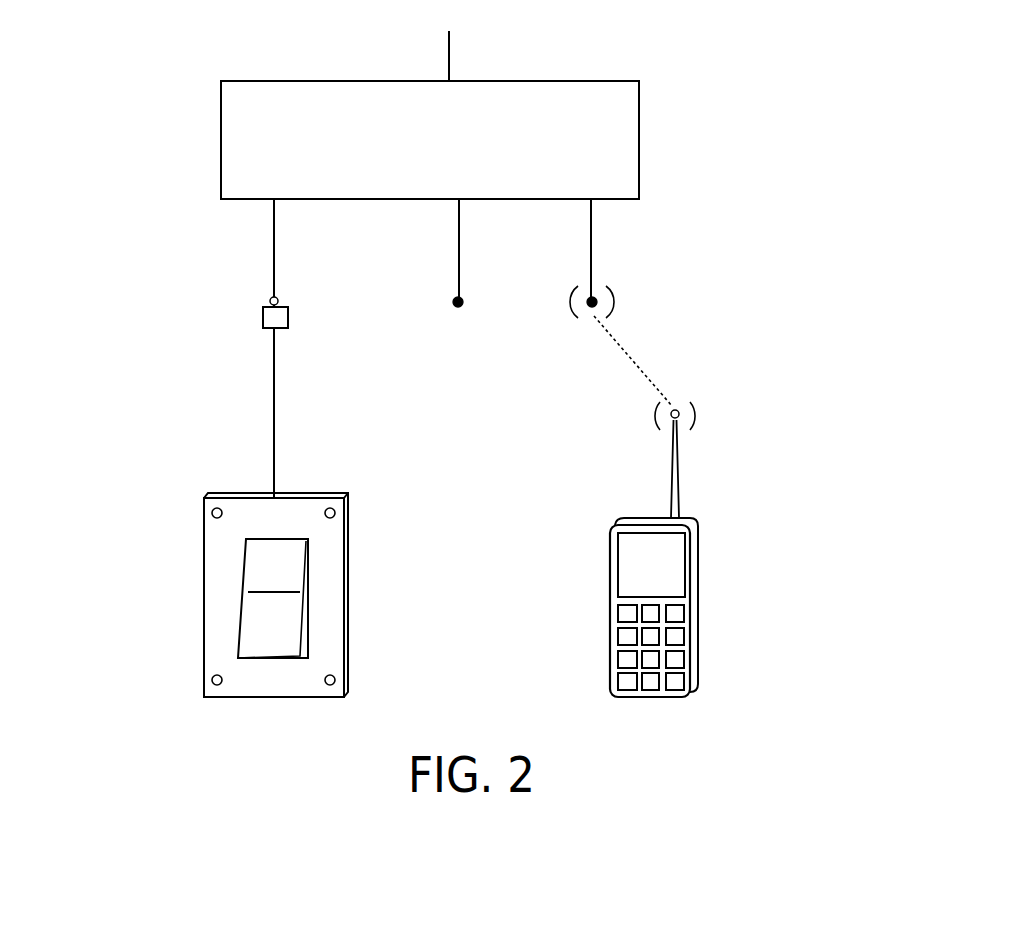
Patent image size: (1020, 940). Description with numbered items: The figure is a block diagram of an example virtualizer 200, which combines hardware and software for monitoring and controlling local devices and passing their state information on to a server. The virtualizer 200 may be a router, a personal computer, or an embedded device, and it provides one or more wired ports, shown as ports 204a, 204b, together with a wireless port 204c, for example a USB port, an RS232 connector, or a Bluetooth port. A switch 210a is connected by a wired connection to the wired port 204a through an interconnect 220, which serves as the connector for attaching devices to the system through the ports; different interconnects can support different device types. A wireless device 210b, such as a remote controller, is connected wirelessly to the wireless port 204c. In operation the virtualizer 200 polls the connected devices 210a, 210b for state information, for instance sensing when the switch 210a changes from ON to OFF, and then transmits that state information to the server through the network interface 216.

The virtualizer 200 is at (724, 184).
The network interface 216 is at (447, 53).
The wired port 204a is at (270, 298).
The wired port 204b is at (453, 302).
The wireless port 204c is at (588, 297).
The interconnect 220 is at (264, 331).
The switch 210a is at (348, 566).
The device 210b is at (608, 570).